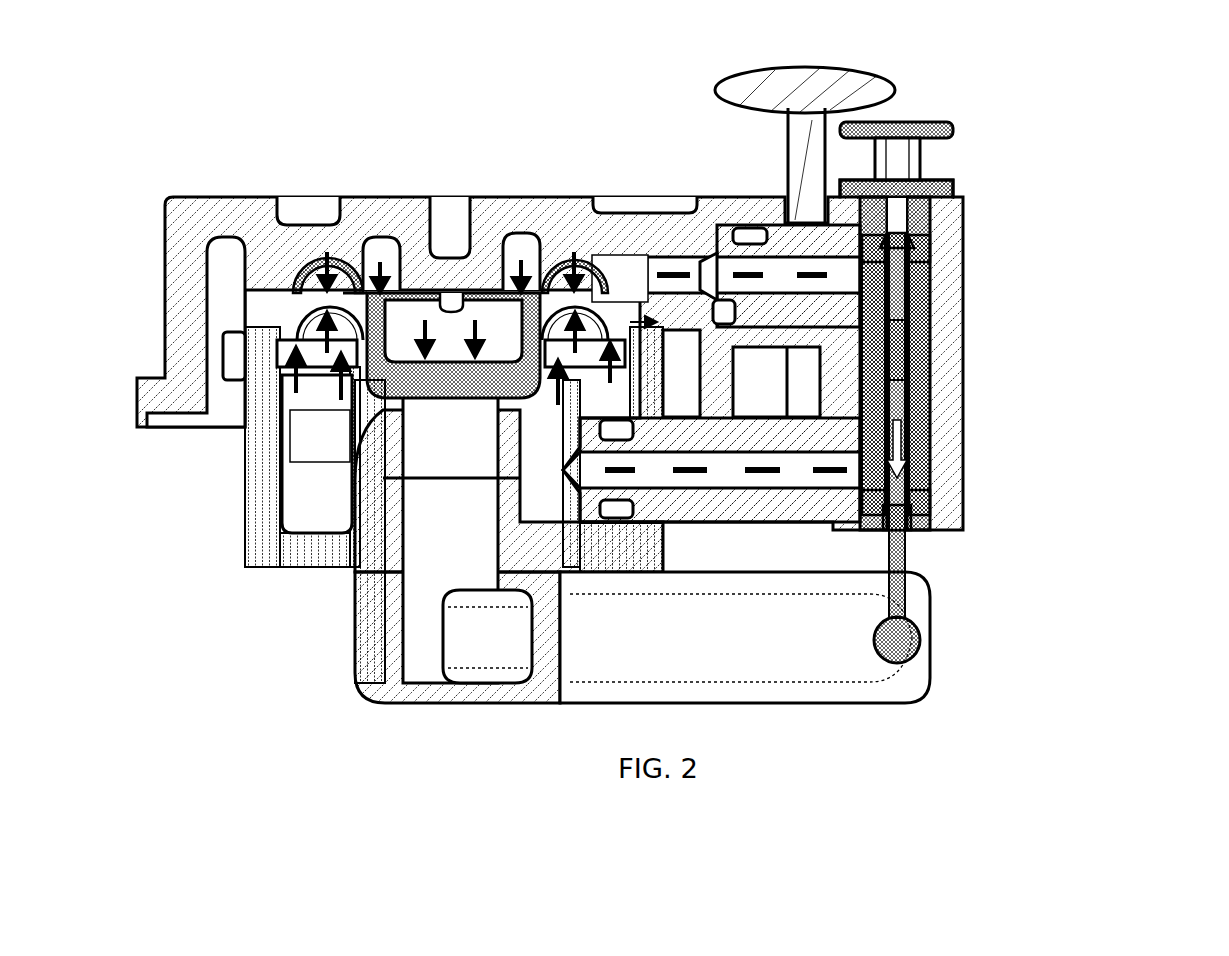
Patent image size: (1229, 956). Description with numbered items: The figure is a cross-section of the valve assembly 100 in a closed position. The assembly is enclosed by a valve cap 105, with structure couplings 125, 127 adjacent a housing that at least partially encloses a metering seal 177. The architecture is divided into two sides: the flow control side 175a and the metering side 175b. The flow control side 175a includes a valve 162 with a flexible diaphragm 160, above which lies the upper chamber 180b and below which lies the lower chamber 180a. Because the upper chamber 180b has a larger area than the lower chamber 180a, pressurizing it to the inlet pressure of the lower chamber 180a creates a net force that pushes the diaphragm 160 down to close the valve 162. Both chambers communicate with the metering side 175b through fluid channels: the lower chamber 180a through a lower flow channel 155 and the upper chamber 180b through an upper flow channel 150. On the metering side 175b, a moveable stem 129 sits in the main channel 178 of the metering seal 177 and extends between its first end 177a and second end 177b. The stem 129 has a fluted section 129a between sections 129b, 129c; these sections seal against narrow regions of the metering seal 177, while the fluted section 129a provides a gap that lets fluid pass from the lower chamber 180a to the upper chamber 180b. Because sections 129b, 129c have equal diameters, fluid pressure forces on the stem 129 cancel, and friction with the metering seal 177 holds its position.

The valve assembly 100 is at (671, 402).
The valve cap 105 is at (208, 208).
The structure coupling 125 is at (845, 78).
The structure coupling 127 is at (952, 127).
The stem 129 is at (960, 448).
The fluted section 129a is at (897, 343).
The stem section 129b is at (912, 245).
The stem section 129c is at (905, 522).
The upper flow channel 150 is at (690, 262).
The lower flow channel 155 is at (732, 487).
The flexible diaphragm 160 is at (322, 287).
The valve 162 is at (414, 414).
The flow control side 175a is at (410, 350).
The metering side 175b is at (967, 207).
The metering seal 177 is at (930, 270).
The first end of metering seal 177a is at (930, 492).
The second end of metering seal 177b is at (925, 245).
The main channel 178 is at (930, 363).
The lower chamber 180a is at (287, 432).
The upper chamber 180b is at (600, 252).